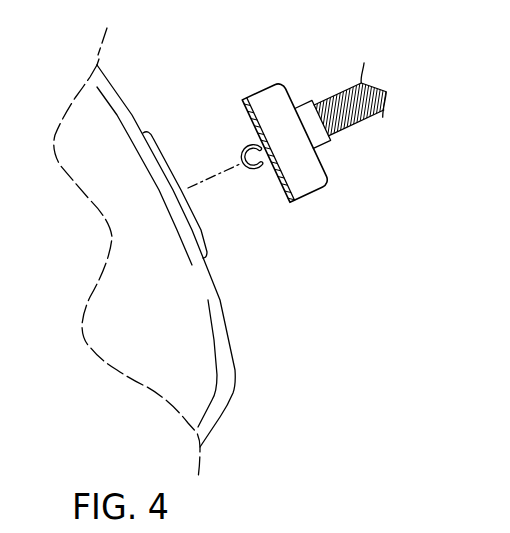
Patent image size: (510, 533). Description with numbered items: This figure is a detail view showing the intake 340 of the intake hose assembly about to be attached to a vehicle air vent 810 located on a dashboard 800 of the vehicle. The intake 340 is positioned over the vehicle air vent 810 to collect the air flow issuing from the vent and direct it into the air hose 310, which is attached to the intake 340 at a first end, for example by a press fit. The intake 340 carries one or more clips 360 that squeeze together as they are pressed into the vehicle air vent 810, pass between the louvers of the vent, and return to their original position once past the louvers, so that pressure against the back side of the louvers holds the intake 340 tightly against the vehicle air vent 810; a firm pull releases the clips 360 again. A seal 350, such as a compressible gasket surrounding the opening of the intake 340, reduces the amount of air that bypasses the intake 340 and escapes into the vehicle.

The air hose 310 is at (357, 118).
The intake 340 is at (325, 177).
The seal 350 is at (291, 203).
The clips 360 is at (247, 143).
The dashboard 800 is at (233, 392).
The vehicle air vent 810 is at (208, 252).